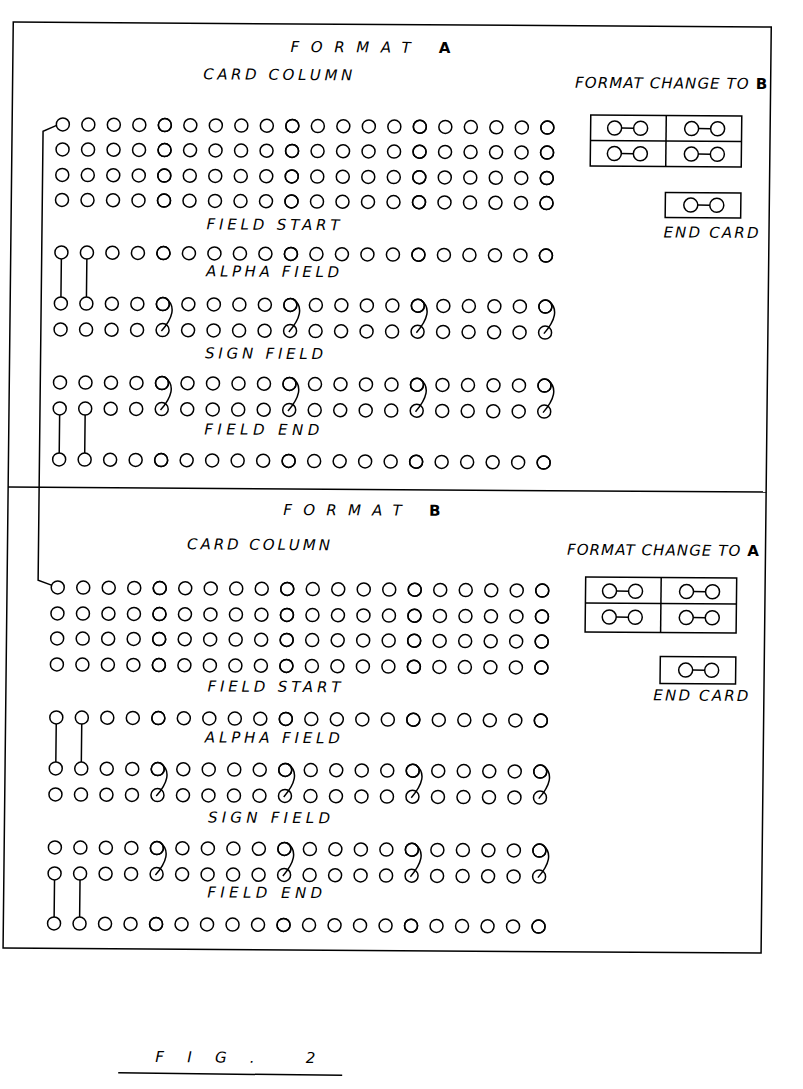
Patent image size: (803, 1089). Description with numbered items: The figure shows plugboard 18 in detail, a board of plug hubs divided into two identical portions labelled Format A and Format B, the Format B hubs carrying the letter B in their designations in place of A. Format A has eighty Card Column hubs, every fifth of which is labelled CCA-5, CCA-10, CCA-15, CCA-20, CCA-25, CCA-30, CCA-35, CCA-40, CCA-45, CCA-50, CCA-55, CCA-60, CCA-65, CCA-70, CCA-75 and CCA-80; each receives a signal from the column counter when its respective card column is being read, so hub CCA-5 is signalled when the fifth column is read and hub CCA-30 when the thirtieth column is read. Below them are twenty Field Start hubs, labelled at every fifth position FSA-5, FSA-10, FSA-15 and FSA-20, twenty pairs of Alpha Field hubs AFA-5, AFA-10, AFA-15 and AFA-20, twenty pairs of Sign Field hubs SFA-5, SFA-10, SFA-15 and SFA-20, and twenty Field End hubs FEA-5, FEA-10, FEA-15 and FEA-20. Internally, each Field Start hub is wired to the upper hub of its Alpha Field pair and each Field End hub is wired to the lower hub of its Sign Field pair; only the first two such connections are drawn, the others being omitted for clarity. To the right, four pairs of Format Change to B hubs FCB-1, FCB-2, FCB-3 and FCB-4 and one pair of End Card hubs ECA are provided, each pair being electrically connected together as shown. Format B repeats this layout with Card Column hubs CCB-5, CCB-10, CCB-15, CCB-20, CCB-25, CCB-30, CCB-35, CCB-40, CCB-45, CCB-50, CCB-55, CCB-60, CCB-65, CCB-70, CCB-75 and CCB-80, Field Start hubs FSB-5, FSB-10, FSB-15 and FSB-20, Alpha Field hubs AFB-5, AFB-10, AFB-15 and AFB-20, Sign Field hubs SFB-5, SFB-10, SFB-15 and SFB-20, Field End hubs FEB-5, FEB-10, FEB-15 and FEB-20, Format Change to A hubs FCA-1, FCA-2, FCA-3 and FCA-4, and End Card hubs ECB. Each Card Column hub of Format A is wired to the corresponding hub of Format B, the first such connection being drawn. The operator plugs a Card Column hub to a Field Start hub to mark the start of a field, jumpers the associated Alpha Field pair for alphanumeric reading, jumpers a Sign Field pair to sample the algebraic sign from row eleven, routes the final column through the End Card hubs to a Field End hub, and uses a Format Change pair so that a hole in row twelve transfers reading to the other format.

The plugboard 18 is at (578, 27).
The Card Column hub CCA-5 is at (170, 105).
The Card Column hub CCA-10 is at (309, 104).
The Card Column hub CCA-15 is at (437, 103).
The Card Column hub CCA-20 is at (565, 102).
The Card Column hub CCA-25 is at (175, 138).
The Card Column hub CCA-30 is at (309, 137).
The Card Column hub CCA-35 is at (437, 136).
The Card Column hub CCA-40 is at (565, 135).
The Card Column hub CCA-45 is at (175, 163).
The Card Column hub CCA-50 is at (309, 162).
The Card Column hub CCA-55 is at (437, 161).
The Card Column hub CCA-60 is at (565, 160).
The Card Column hub CCA-65 is at (175, 190).
The Card Column hub CCA-70 is at (309, 189).
The Card Column hub CCA-75 is at (437, 188).
The Card Column hub CCA-80 is at (565, 187).
The Field Start hub FSA-5 is at (170, 237).
The Field Start hub FSA-10 is at (309, 236).
The Field Start hub FSA-15 is at (437, 235).
The Field Start hub FSA-20 is at (565, 234).
The Alpha Field hub pair AFA-5 is at (170, 290).
The Alpha Field hub pair AFA-10 is at (309, 289).
The Alpha Field hub pair AFA-15 is at (437, 288).
The Alpha Field hub pair AFA-20 is at (565, 287).
The Sign Field hub pair SFA-5 is at (170, 367).
The Sign Field hub pair SFA-10 is at (309, 366).
The Sign Field hub pair SFA-15 is at (437, 365).
The Sign Field hub pair SFA-20 is at (565, 364).
The Field End hub FEA-5 is at (170, 447).
The Field End hub FEA-10 is at (309, 446).
The Field End hub FEA-15 is at (437, 445).
The Field End hub FEA-20 is at (565, 444).
The Format Change to B hub pair FCB-1 is at (650, 102).
The Format Change to B hub pair FCB-2 is at (727, 102).
The Format Change to B hub pair FCB-3 is at (648, 178).
The Format Change to B hub pair FCB-4 is at (726, 178).
The End Card hub pair ECA is at (686, 201).
The Card Column hub CCB-5 is at (170, 570).
The Card Column hub CCB-10 is at (309, 569).
The Card Column hub CCB-15 is at (437, 568).
The Card Column hub CCB-20 is at (565, 567).
The Card Column hub CCB-25 is at (175, 598).
The Card Column hub CCB-30 is at (309, 597).
The Card Column hub CCB-35 is at (437, 596).
The Card Column hub CCB-40 is at (565, 595).
The Card Column hub CCB-45 is at (175, 623).
The Card Column hub CCB-50 is at (309, 622).
The Card Column hub CCB-55 is at (437, 621).
The Card Column hub CCB-60 is at (565, 620).
The Card Column hub CCB-65 is at (175, 651).
The Card Column hub CCB-70 is at (309, 650).
The Card Column hub CCB-75 is at (437, 649).
The Card Column hub CCB-80 is at (565, 648).
The Field Start hub FSB-5 is at (170, 703).
The Field Start hub FSB-10 is at (309, 702).
The Field Start hub FSB-15 is at (437, 701).
The Field Start hub FSB-20 is at (565, 700).
The Alpha Field hub pair AFB-5 is at (170, 755).
The Alpha Field hub pair AFB-10 is at (309, 754).
The Alpha Field hub pair AFB-15 is at (437, 753).
The Alpha Field hub pair AFB-20 is at (565, 752).
The Sign Field hub pair SFB-5 is at (170, 831).
The Sign Field hub pair SFB-10 is at (309, 830).
The Sign Field hub pair SFB-15 is at (437, 829).
The Sign Field hub pair SFB-20 is at (565, 828).
The Field End hub FEB-5 is at (170, 908).
The Field End hub FEB-10 is at (309, 907).
The Field End hub FEB-15 is at (437, 906).
The Field End hub FEB-20 is at (565, 905).
The Format Change to A hub pair FCA-1 is at (644, 564).
The Format Change to A hub pair FCA-2 is at (726, 564).
The Format Change to A hub pair FCA-3 is at (650, 637).
The Format Change to A hub pair FCA-4 is at (727, 637).
The End Card hub pair ECB is at (686, 667).